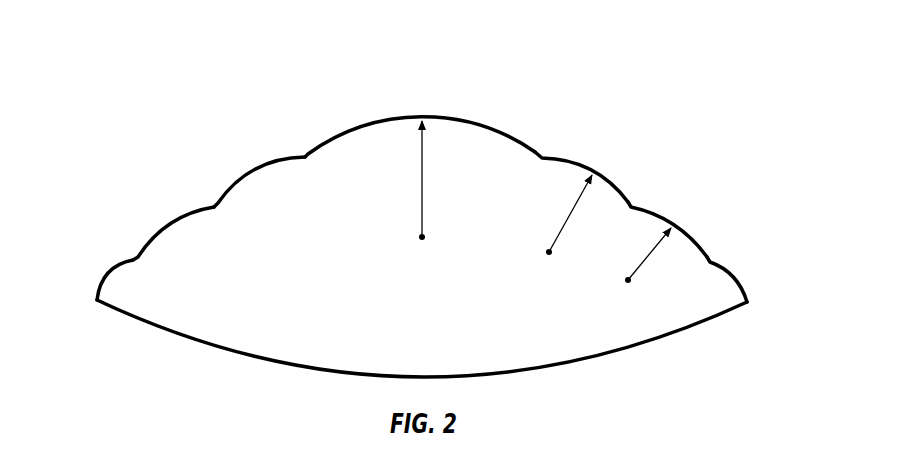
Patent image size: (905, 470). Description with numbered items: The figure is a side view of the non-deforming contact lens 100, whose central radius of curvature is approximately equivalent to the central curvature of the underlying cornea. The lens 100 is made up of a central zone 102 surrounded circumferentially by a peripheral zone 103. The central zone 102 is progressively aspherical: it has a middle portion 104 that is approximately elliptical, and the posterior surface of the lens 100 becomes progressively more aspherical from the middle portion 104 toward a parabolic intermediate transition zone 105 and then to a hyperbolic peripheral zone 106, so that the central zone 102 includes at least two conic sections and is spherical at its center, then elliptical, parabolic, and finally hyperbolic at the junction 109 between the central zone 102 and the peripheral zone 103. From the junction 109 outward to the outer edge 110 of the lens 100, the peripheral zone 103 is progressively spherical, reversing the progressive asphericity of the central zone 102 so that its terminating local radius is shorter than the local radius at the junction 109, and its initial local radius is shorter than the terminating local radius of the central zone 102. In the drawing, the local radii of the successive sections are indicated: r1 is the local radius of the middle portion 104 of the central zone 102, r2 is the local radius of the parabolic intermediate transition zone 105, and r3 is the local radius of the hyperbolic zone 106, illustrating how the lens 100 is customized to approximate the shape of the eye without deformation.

The non-deforming contact lens 100 is at (166, 72).
The central zone 102 is at (795, 258).
The peripheral zone 103 is at (111, 267).
The middle portion 104 is at (337, 127).
The parabolic intermediate transition zone 105 is at (251, 169).
The hyperbolic peripheral zone 106 is at (164, 222).
The junction 109 is at (710, 260).
The outer edge 110 is at (747, 302).
The local radius of the middle portion r1 is at (424, 196).
The local radius of the parabolic intermediate transition zone r2 is at (560, 229).
The local radius of the hyperbolic zone r3 is at (639, 268).